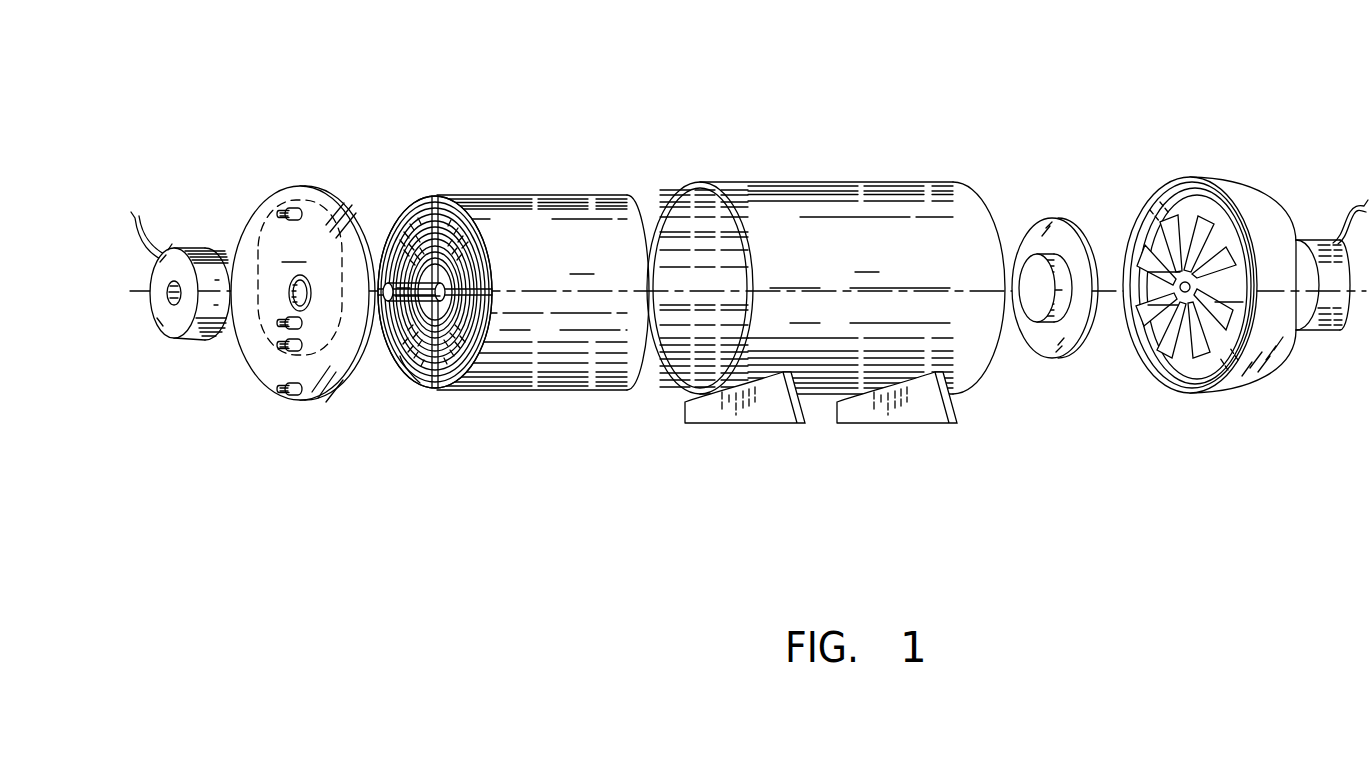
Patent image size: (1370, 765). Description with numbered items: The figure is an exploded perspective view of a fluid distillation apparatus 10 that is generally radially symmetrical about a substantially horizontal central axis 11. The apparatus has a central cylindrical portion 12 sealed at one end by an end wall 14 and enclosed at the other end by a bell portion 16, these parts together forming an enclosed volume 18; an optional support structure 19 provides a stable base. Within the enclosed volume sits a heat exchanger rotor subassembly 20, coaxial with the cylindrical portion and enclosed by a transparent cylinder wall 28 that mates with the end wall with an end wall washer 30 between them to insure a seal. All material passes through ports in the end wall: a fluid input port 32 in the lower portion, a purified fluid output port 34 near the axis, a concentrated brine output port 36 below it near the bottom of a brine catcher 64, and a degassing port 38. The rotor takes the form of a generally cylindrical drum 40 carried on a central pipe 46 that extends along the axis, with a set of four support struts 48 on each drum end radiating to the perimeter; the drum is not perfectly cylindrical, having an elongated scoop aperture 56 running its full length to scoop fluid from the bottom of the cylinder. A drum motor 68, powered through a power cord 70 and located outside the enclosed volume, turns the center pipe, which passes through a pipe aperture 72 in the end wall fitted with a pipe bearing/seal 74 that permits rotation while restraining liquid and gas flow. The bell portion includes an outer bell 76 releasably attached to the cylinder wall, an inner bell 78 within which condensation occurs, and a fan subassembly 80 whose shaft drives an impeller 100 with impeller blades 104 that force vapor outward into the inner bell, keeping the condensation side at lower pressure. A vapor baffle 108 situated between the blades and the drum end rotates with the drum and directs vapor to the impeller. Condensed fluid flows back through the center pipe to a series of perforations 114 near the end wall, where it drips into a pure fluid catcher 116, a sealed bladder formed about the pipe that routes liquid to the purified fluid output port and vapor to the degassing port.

The distillation apparatus 10 is at (683, 70).
The central axis 11 is at (152, 318).
The central cylindrical portion 12 is at (433, 157).
The end wall 14 is at (291, 288).
The bell portion 16 is at (1216, 260).
The enclosed volume 18 is at (1302, 473).
The support structure 19 is at (755, 418).
The heat exchanger rotor subassembly 20 is at (543, 276).
The cylinder wall 28 is at (826, 288).
The end wall washer 30 is at (320, 260).
The fluid input port 32 is at (291, 396).
The purified fluid output port 34 is at (279, 324).
The concentrated brine output port 36 is at (279, 346).
The degassing port 38 is at (291, 208).
The rotor drum 40 is at (526, 216).
The central pipe 46 is at (398, 338).
The support struts 48 is at (424, 302).
The scoop aperture 56 is at (427, 388).
The brine catcher 64 is at (322, 392).
The drum motor 68 is at (191, 253).
The power cord 70 is at (151, 222).
The pipe aperture 72 is at (290, 296).
The pipe bearing/seal 74 is at (289, 292).
The outer bell 76 is at (1262, 362).
The inner bell 78 is at (1185, 352).
The fan subassembly 80 is at (1314, 250).
The impeller 100 is at (1162, 250).
The impeller blades 104 is at (1184, 226).
The vapor baffle 108 is at (1048, 230).
The perforations 114 is at (425, 333).
The pure fluid catcher 116 is at (324, 207).